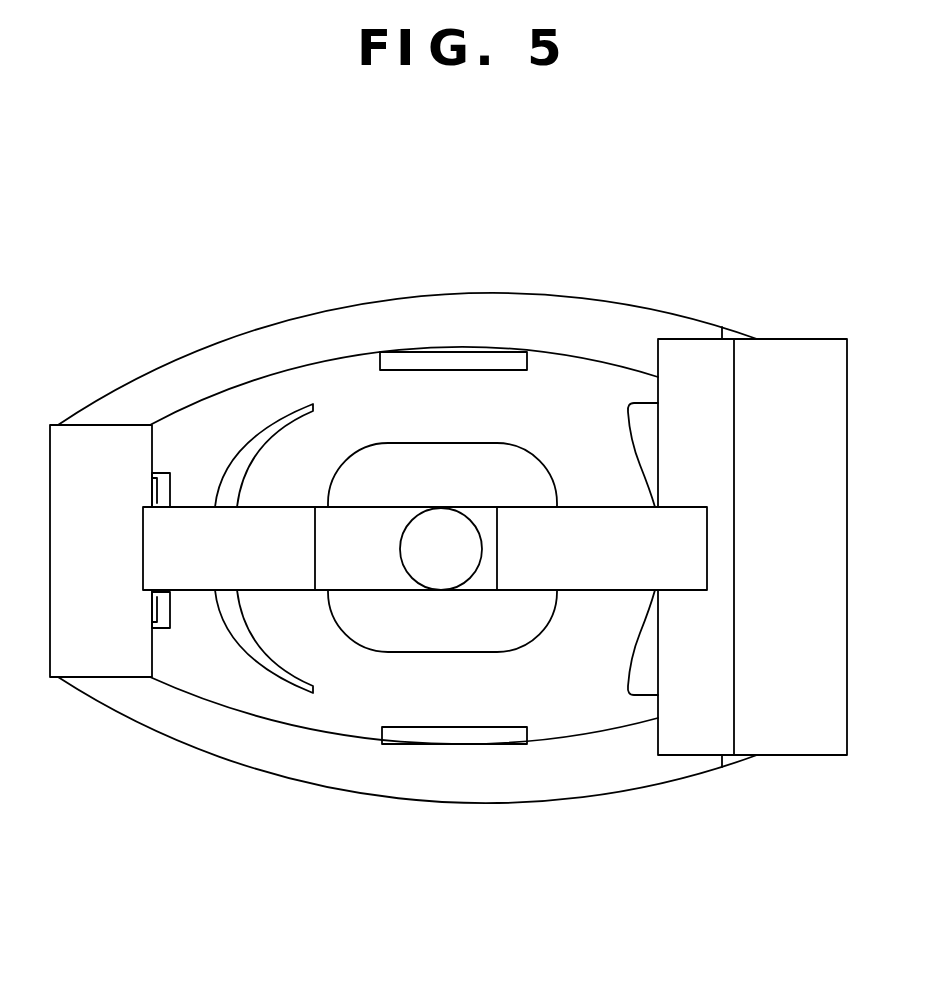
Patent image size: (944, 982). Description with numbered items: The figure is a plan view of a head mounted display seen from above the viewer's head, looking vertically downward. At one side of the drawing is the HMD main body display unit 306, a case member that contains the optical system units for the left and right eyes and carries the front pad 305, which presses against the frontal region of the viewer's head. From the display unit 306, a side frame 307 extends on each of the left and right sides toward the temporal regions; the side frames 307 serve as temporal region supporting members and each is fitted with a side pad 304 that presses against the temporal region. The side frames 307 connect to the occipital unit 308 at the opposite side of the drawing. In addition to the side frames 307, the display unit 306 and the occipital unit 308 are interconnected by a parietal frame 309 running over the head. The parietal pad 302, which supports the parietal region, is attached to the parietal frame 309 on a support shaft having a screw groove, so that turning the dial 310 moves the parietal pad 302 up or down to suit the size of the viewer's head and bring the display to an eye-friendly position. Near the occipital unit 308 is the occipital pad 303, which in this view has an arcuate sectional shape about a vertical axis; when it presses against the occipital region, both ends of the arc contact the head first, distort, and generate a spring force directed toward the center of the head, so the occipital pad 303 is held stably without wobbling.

The parietal pad 302 is at (530, 643).
The occipital pad 303 is at (267, 428).
The side pads 304 is at (493, 358).
The front pad 305 is at (647, 422).
The HMD main body display unit 306 is at (780, 362).
The side frame 307 is at (448, 315).
The occipital unit 308 is at (103, 648).
The parietal frame 309 is at (584, 533).
The dial 310 is at (434, 527).